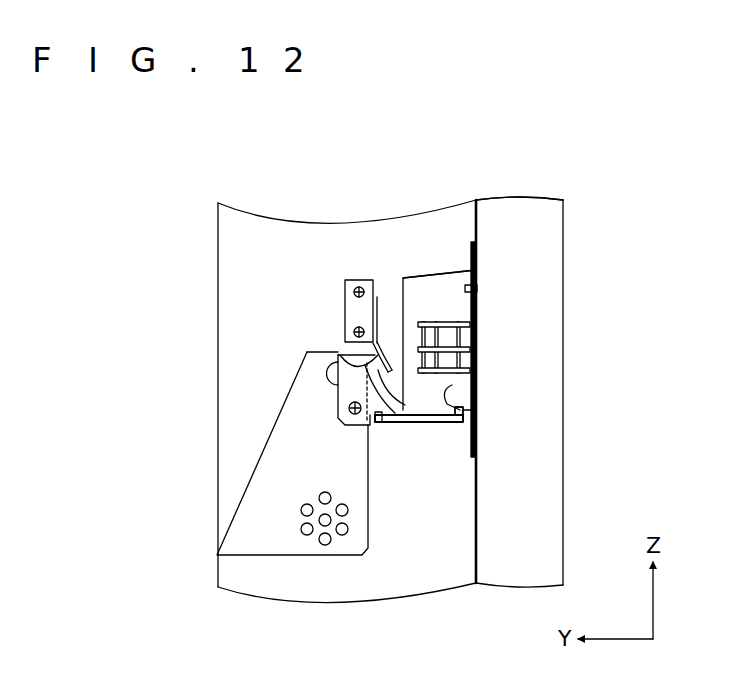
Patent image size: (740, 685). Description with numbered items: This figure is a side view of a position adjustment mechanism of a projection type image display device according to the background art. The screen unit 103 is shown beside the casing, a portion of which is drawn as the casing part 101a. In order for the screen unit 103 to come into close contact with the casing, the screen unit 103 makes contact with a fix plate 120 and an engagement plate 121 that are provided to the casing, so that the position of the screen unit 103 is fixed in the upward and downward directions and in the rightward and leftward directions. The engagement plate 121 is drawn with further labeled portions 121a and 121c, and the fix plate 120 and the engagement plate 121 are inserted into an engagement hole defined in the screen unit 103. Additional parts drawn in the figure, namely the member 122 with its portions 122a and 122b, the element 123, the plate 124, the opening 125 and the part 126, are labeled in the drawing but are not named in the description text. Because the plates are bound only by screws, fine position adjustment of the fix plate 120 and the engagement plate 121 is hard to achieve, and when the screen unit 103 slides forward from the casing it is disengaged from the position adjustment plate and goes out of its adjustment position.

The side wall of housing 101a is at (532, 348).
The screen unit 103 is at (243, 245).
The fix plate 120 is at (477, 257).
The engagement plate 121 is at (457, 307).
The hook portion 121a is at (452, 385).
The edge portion of plate 121c is at (450, 273).
The bracket 122 is at (405, 420).
The engaging portion of bracket 122a is at (476, 418).
The curved portion of bracket 122b is at (357, 363).
The holder 123 is at (373, 430).
The plate with holes 124 is at (260, 513).
The notch 125 is at (317, 377).
The fixing plate 126 is at (378, 300).